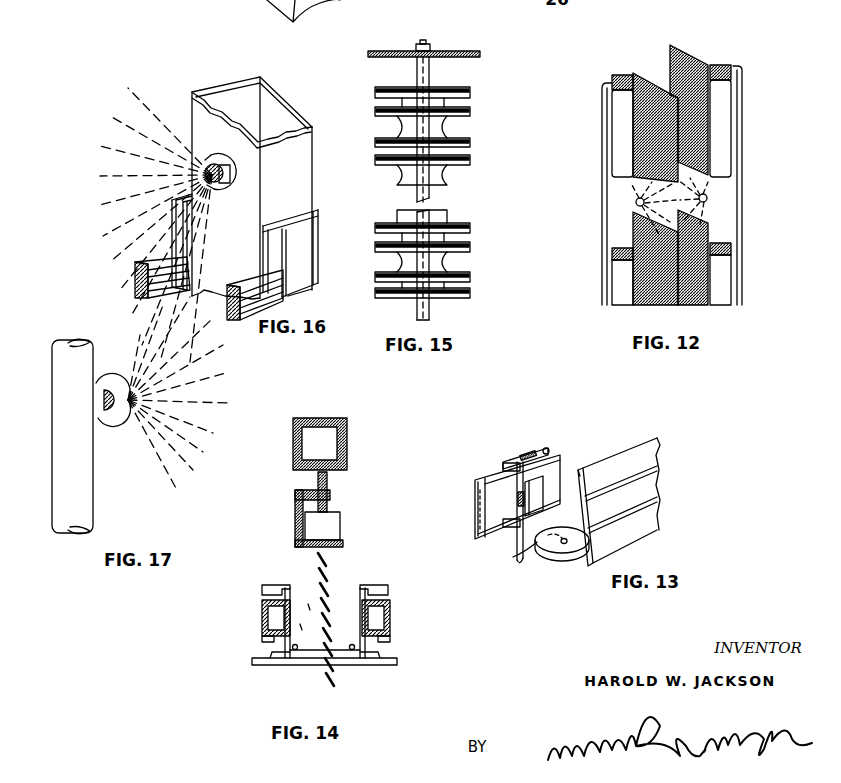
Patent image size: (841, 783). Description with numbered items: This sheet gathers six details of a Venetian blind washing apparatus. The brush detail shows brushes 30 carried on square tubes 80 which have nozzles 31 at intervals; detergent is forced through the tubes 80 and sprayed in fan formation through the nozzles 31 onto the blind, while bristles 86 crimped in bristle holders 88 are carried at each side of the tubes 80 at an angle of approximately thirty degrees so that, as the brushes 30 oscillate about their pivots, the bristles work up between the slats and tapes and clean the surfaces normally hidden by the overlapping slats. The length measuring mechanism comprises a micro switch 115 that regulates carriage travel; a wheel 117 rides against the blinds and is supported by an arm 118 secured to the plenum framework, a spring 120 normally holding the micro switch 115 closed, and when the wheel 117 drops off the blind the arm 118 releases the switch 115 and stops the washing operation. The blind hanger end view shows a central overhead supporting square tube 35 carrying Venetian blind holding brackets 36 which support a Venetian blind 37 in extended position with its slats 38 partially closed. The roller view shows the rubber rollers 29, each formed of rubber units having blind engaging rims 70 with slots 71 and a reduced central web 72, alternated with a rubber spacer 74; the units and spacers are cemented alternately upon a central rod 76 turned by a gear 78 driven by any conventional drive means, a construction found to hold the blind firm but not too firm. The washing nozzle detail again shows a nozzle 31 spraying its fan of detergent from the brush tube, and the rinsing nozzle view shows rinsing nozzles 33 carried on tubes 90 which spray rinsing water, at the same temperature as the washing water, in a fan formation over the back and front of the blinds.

In FIG. 16, the brushes 30 is at (287, 175).
In FIG. 12, the brushes 30 is at (626, 227).
In FIG. 16, the nozzles 31 is at (218, 187).
In FIG. 12, the nozzles 31 is at (636, 201).
In FIG. 16, the bristles 86 is at (236, 320).
In FIG. 12, the bristles 86 is at (650, 80).
In FIG. 15, the gear 78 is at (470, 52).
In FIG. 15, the blind engaging rims 70 is at (466, 88).
In FIG. 15, the slots 71 is at (378, 91).
In FIG. 15, the reduced central web 72 is at (402, 102).
In FIG. 15, the rubber rollers 29 is at (468, 111).
In FIG. 15, the spacer 74 is at (433, 128).
In FIG. 15, the central rod 76 is at (427, 200).
In FIG. 12, the bristle holders 88 is at (617, 108).
In FIG. 12, the square tubes 80 is at (606, 135).
In FIG. 17, the rinsing nozzles 33 is at (101, 415).
In FIG. 17, the tubes 90 is at (79, 488).
In FIG. 14, the central overhead supporting square tube 35 is at (347, 437).
In FIG. 14, the Venetian blind holding brackets 36 is at (295, 518).
In FIG. 14, the Venetian blind 37 is at (331, 596).
In FIG. 14, the slats 38 is at (318, 675).
In FIG. 13, the spring 120 is at (527, 456).
In FIG. 13, the micro switch 115 is at (543, 495).
In FIG. 13, the arm 118 is at (517, 530).
In FIG. 13, the wheel 117 is at (572, 549).